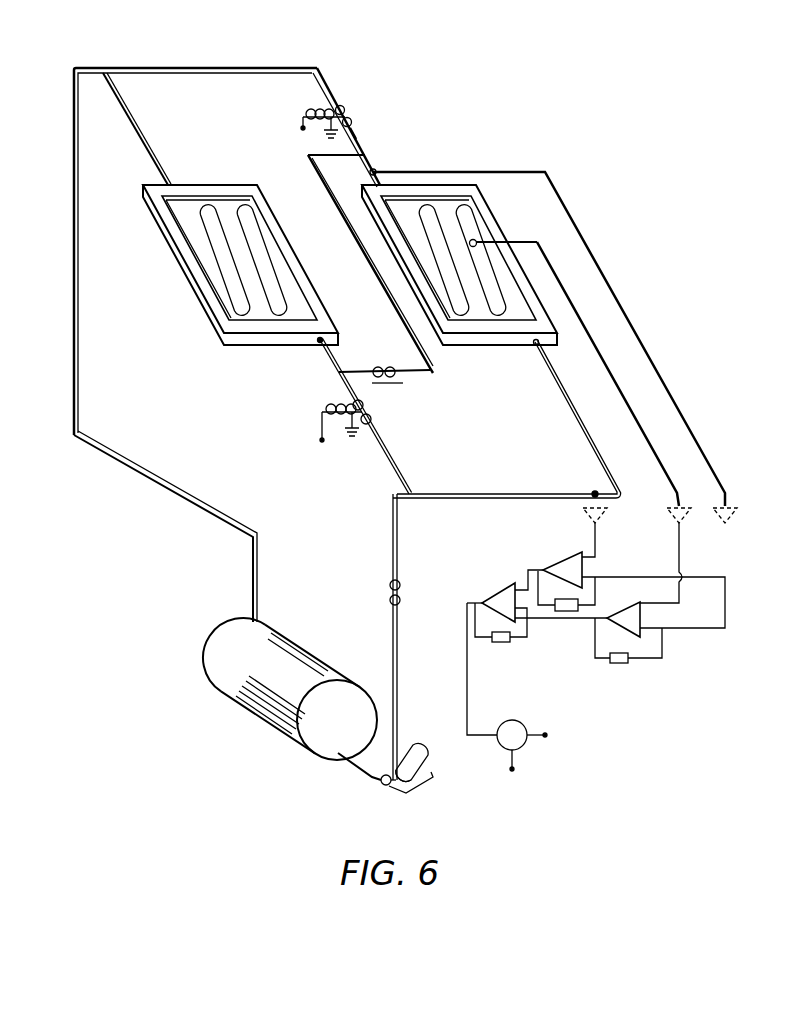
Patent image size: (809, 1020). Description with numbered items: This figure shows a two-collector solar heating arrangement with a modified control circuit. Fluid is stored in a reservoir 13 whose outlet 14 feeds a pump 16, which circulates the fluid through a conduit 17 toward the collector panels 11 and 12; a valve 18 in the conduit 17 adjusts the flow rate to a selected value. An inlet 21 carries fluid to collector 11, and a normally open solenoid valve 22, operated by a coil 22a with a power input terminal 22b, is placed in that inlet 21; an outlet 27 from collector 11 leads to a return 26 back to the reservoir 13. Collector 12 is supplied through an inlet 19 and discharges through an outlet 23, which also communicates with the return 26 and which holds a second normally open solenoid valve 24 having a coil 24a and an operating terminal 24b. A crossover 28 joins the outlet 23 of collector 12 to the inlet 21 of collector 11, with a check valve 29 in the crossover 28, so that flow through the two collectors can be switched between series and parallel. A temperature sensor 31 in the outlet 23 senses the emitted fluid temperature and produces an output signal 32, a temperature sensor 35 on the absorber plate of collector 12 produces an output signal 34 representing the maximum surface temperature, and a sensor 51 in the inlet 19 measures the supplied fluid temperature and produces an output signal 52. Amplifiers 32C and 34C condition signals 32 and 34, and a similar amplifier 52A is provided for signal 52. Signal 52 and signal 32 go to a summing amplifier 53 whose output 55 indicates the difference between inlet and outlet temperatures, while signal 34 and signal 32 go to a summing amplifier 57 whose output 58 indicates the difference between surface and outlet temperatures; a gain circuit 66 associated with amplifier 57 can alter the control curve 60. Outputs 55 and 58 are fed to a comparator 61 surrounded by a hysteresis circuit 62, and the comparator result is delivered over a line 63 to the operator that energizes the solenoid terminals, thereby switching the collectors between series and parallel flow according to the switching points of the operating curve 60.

The collector panel 11 is at (181, 223).
The collector panel 12 is at (496, 316).
The reservoir 13 is at (290, 689).
The outlet 14 is at (346, 758).
The pump 16 is at (412, 772).
The conduit 17 is at (387, 642).
The valve 18 is at (391, 592).
The inlet 19 is at (556, 383).
The inlet 21 is at (330, 361).
The solenoid valve 22 is at (369, 416).
The coil 22a is at (337, 410).
The power input terminal 22b is at (320, 441).
The outlet 23 is at (359, 130).
The solenoid valve 24 is at (384, 94).
The coil 24a is at (320, 110).
The operating terminal 24b is at (302, 130).
The return 26 is at (250, 66).
The outlet 27 is at (156, 152).
The crossover 28 is at (330, 190).
The check valve 29 is at (390, 366).
The temperature sensor 31 is at (378, 170).
The output signal 32 is at (583, 240).
The amplifier 32C is at (738, 514).
The output signal 34 is at (597, 350).
The amplifier 34C is at (684, 518).
The temperature sensor 35 is at (477, 242).
The sensor 51 is at (595, 492).
The output signal 52 is at (597, 510).
The amplifier 52A is at (601, 524).
The summing amplifier 53 is at (567, 556).
The output 55 is at (538, 568).
The summing amplifier 57 is at (650, 623).
The output 58 is at (589, 621).
The operating curve 60 is at (582, 608).
The comparator 61 is at (497, 586).
The hysteresis circuit 62 is at (505, 643).
The control output line 63 is at (466, 700).
The gain circuit 66 is at (618, 664).